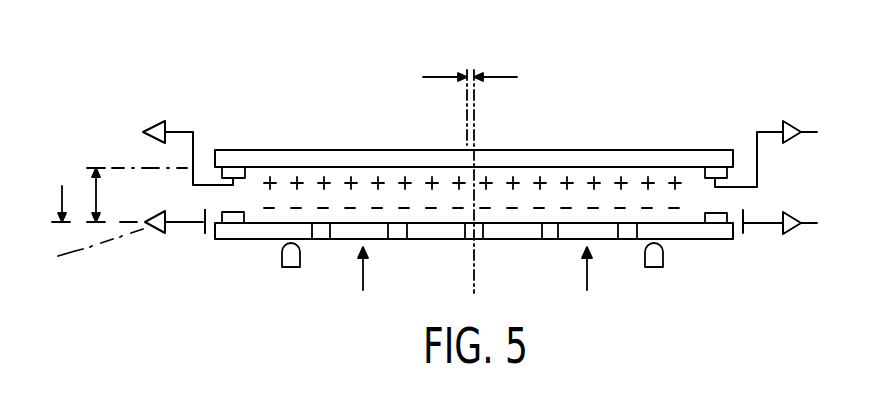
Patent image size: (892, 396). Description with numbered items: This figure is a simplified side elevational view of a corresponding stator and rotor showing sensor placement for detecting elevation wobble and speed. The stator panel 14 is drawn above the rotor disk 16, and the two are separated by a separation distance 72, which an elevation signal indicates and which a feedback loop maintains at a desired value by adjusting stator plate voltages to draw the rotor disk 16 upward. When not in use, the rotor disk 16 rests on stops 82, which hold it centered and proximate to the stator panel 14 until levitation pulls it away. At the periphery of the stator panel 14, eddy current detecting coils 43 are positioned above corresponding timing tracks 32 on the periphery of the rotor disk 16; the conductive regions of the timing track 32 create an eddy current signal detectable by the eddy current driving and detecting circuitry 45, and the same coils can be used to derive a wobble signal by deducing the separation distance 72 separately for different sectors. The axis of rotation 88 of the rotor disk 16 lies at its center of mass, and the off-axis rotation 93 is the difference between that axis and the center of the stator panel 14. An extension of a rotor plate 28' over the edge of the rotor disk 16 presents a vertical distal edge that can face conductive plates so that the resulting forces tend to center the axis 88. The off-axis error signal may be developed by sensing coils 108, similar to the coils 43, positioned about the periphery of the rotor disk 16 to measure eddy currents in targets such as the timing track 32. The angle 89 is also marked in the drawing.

The stator panel 14 is at (586, 157).
The rotor disk 16 is at (680, 232).
The rotor plate 28' is at (512, 267).
The timing track 32 is at (232, 214).
The eddy current detecting coil 43 is at (234, 178).
The eddy current driving and detecting circuitry 45 is at (150, 218).
The separation distance 72 is at (95, 195).
The stop 82 is at (291, 267).
The axis of rotation 88 is at (471, 290).
The tilt angle 89 is at (87, 292).
The off-axis rotation 93 is at (472, 70).
The sensing coil 108 is at (203, 225).